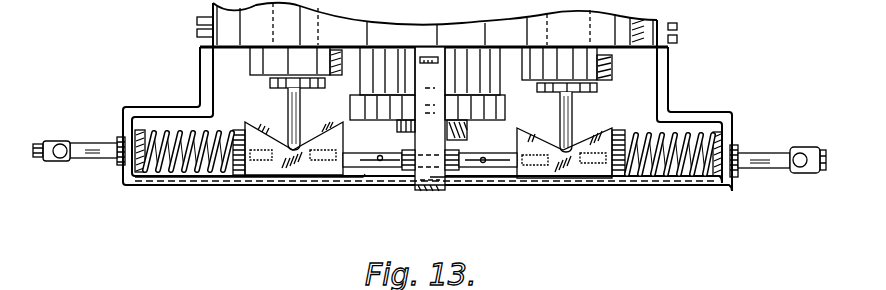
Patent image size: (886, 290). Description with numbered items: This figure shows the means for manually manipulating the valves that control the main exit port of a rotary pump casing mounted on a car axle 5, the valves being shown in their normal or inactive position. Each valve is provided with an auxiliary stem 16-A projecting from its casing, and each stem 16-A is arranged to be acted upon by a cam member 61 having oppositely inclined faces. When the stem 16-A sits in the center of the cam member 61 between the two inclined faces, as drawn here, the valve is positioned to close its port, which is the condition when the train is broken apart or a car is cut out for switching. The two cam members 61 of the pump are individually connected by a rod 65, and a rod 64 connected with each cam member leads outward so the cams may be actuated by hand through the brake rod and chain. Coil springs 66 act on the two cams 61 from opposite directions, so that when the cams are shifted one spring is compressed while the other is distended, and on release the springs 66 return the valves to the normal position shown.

The car axle 5 is at (468, 131).
The auxiliary stem 16-A is at (288, 108).
The cam member 61 is at (273, 168).
The rod 64 is at (93, 163).
The rod 65 is at (393, 161).
The coil spring 66 is at (185, 168).